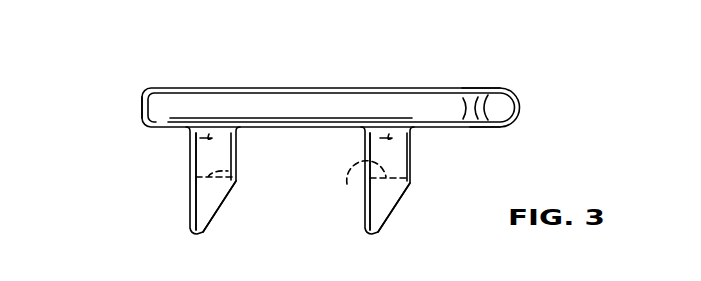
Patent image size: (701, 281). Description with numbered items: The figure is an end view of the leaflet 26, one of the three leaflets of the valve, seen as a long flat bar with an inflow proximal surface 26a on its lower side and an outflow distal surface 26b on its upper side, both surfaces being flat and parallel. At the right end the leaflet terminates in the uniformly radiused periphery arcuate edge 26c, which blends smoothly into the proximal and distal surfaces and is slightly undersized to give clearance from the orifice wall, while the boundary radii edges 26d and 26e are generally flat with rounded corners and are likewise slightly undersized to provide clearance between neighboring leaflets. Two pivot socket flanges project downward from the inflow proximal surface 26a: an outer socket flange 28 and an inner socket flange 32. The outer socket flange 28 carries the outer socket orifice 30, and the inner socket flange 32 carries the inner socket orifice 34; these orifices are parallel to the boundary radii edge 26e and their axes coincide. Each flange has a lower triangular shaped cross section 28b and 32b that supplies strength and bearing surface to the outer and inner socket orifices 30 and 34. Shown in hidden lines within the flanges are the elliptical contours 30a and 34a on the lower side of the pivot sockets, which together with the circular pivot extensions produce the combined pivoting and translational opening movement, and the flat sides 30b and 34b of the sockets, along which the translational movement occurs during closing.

The leaflet 26 is at (375, 87).
The inflow proximal surface 26a is at (488, 127).
The outflow distal surface 26b is at (471, 88).
The periphery arcuate edge 26c is at (521, 109).
The boundary radii edge 26d is at (284, 108).
The boundary radii edge 26e is at (142, 112).
The outer socket flange 28 is at (410, 183).
The lower triangular shaped cross section 28b is at (377, 202).
The outer socket orifice 30 is at (392, 156).
The elliptical contour 30a is at (364, 183).
The flat side 30b is at (384, 137).
The inner socket flange 32 is at (190, 207).
The lower triangular shaped cross section 32b is at (207, 199).
The inner socket orifice 34 is at (204, 161).
The elliptical contour 34a is at (238, 173).
The flat side 34b is at (206, 137).